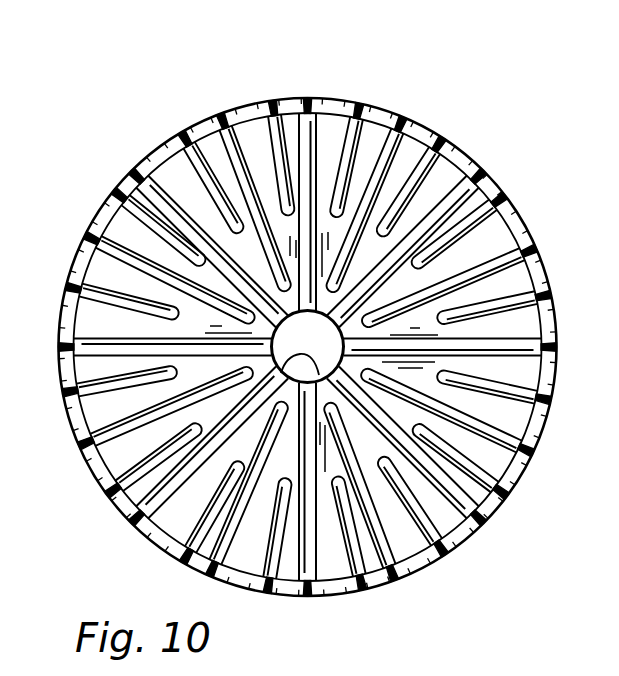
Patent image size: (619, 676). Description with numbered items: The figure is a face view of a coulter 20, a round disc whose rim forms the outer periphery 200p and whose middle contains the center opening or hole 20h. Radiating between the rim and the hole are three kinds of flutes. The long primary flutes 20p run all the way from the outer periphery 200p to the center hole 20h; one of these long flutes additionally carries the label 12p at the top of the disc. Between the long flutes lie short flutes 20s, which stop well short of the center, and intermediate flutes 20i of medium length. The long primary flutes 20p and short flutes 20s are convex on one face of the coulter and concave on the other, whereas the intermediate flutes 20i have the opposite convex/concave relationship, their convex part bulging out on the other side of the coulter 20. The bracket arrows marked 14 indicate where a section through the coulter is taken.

The coulter 20 is at (440, 103).
The outer periphery 200p is at (235, 110).
The intermediate flutes 20i is at (418, 123).
The center opening or hole 20h is at (135, 521).
The radial rib / spoke 12p is at (298, 128).
The long primary flutes 20p is at (290, 565).
The short flutes 20s is at (347, 140).
The section line 14- 14 is at (493, 167).